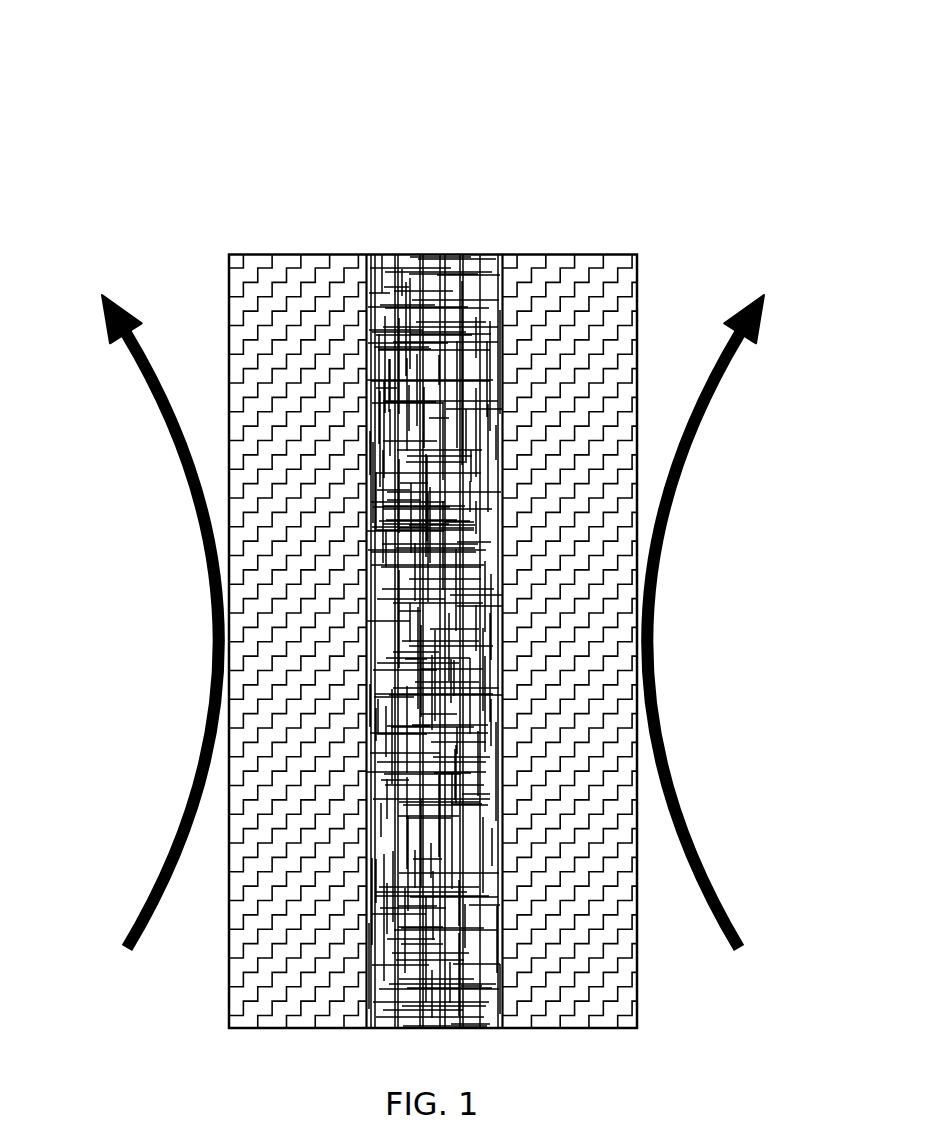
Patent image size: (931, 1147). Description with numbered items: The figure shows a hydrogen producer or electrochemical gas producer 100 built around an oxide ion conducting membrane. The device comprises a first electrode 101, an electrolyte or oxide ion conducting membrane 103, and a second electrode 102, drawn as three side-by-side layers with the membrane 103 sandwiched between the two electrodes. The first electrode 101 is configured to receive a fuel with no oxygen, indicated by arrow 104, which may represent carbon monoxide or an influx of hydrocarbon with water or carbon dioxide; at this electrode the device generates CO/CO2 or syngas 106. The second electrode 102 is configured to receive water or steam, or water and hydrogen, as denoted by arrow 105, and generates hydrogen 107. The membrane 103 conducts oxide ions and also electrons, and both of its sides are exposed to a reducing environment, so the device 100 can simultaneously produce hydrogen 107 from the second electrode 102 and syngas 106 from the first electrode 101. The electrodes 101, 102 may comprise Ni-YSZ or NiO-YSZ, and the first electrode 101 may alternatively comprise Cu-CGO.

The electrochemical gas producer 100 is at (638, 187).
The first electrode 101 is at (288, 287).
The second electrode 102 is at (577, 287).
The oxide ion conducting membrane 103 is at (423, 288).
The fuel influx 104 is at (137, 667).
The water influx 105 is at (728, 670).
The CO/CO2 or syngas product 106 is at (89, 291).
The hydrogen product 107 is at (778, 299).